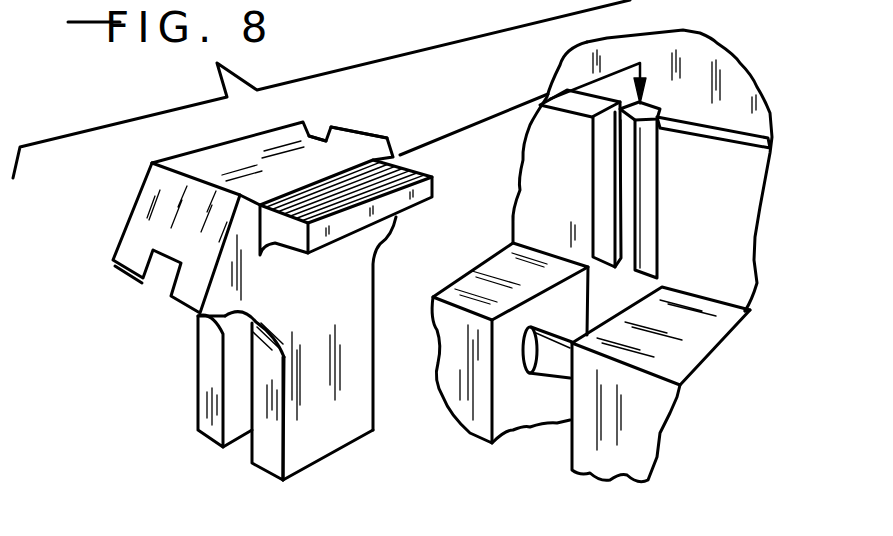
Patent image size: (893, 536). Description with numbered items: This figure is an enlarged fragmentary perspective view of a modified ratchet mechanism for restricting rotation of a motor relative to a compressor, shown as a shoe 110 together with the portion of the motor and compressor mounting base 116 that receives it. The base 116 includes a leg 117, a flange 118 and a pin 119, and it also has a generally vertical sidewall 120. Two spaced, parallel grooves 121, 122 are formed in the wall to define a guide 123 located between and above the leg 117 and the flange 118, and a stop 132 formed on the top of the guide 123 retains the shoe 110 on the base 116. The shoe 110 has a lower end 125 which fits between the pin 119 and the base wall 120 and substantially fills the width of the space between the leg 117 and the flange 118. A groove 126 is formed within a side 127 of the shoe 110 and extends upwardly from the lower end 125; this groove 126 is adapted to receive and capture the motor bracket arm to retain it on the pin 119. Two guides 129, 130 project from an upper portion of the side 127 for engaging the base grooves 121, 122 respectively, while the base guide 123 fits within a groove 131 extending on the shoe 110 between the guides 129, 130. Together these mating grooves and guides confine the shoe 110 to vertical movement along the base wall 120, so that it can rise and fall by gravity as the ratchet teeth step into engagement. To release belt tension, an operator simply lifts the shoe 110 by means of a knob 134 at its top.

The shoe 110 is at (118, 222).
The motor and compressor mounting base 116 is at (734, 348).
The leg 117 is at (613, 457).
The flange 118 is at (477, 412).
The pin 119 is at (542, 351).
The sidewall 120 is at (736, 263).
The groove 121 is at (603, 184).
The groove 122 is at (650, 210).
The guide 123 is at (653, 173).
The lower end 125 is at (318, 418).
The groove 126 is at (238, 365).
The side 127 is at (268, 433).
The guide 129 is at (317, 133).
The guide 130 is at (403, 145).
The groove 131 is at (342, 131).
The stop 132 is at (614, 130).
The knob 134 is at (341, 228).